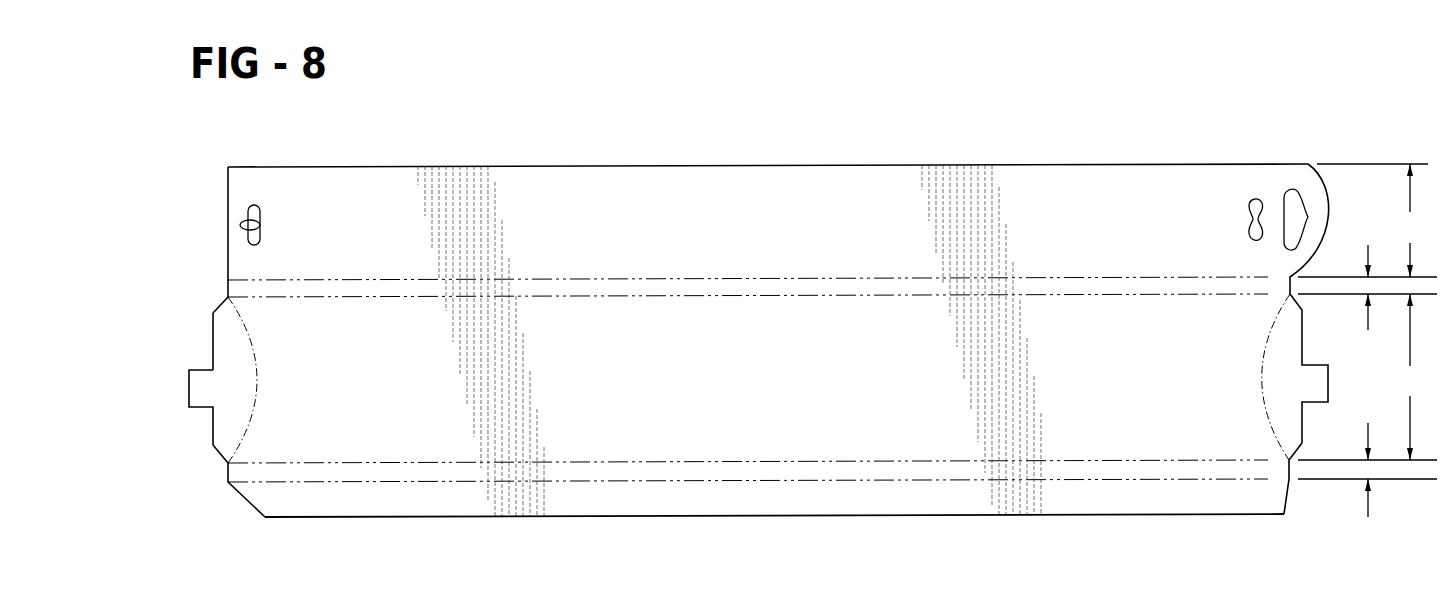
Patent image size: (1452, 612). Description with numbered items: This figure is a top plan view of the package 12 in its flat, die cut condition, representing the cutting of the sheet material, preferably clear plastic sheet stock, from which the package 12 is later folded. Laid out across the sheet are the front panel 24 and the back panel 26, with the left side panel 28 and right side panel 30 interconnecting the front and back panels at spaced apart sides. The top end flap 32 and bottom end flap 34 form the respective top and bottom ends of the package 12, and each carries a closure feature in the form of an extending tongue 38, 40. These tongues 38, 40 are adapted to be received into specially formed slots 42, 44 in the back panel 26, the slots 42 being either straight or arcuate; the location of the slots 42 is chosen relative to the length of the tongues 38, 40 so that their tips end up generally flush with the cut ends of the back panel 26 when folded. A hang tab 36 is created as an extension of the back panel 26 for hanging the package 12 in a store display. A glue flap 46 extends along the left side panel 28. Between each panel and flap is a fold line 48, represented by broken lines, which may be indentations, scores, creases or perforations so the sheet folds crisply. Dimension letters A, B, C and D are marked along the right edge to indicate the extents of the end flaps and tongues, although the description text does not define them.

The package 12 is at (897, 119).
The front panel 24 is at (748, 418).
The back panel 26 is at (748, 254).
The left side panel 28 is at (235, 289).
The right side panel 30 is at (235, 473).
The top end flap 32 is at (1284, 350).
The bottom end flap 34 is at (227, 350).
The hang tab 36 is at (1306, 211).
The tongue 38 is at (1318, 385).
The tongue 40 is at (189, 388).
The slot 42 is at (1249, 226).
The slot 44 is at (256, 218).
The glue flap 46 is at (812, 498).
The fold line 48 is at (257, 381).
The dimension A is at (1367, 377).
The dimension B is at (1368, 245).
The dimension C is at (1367, 220).
The dimension D is at (1368, 423).